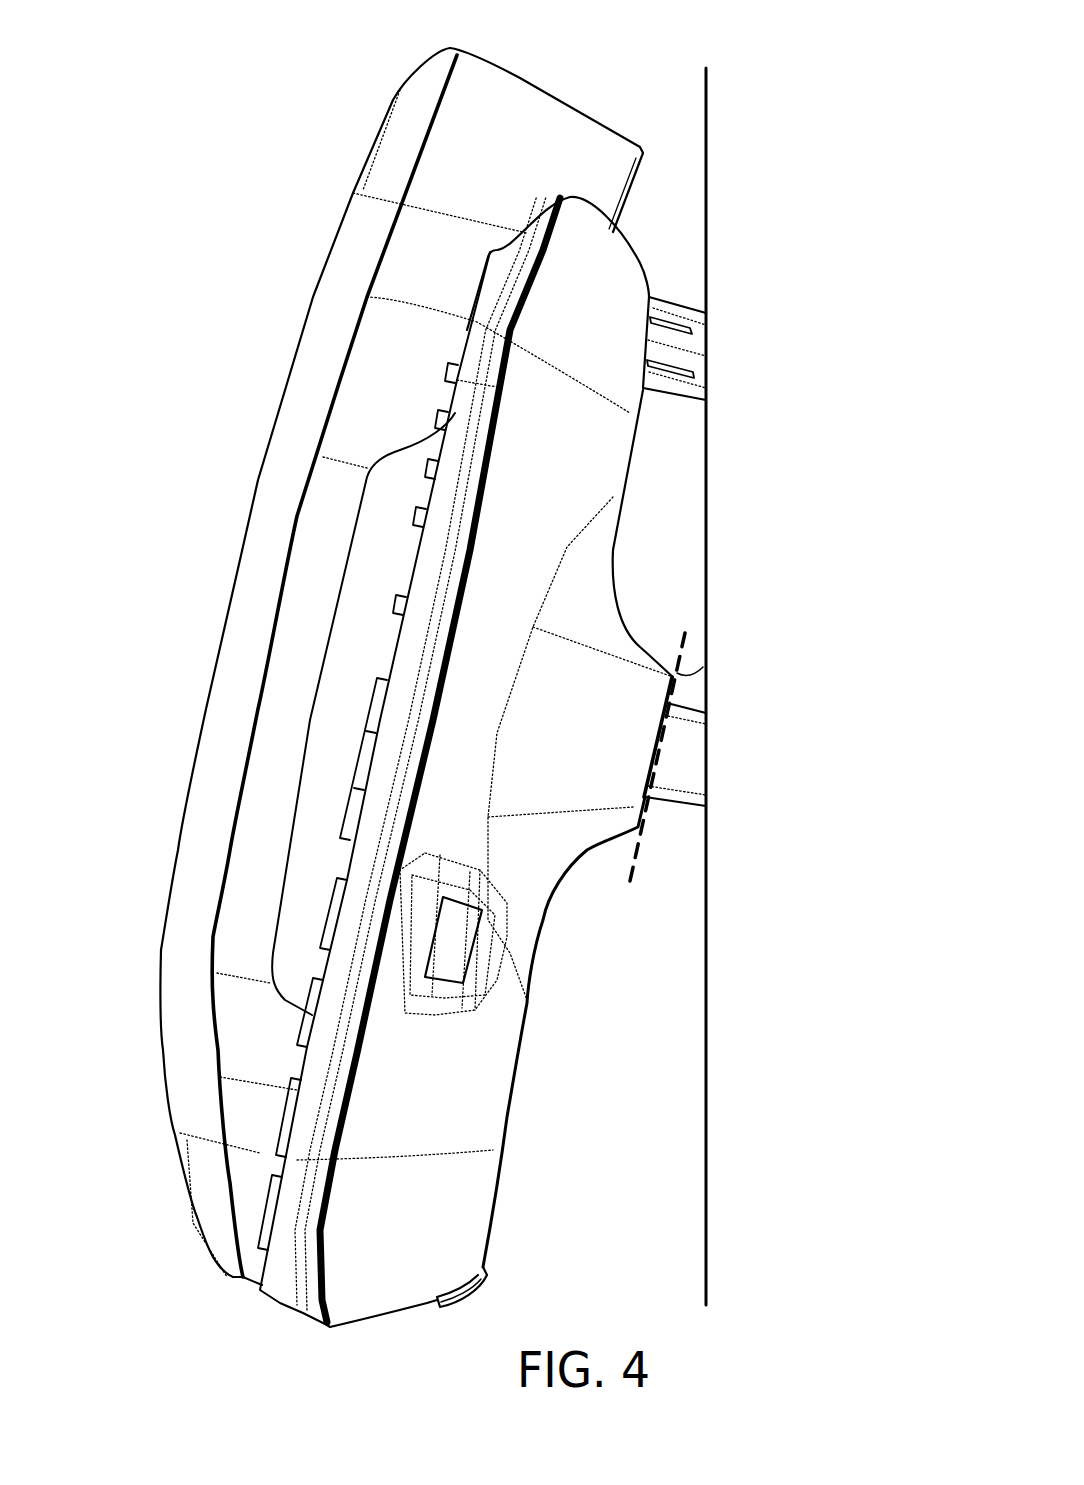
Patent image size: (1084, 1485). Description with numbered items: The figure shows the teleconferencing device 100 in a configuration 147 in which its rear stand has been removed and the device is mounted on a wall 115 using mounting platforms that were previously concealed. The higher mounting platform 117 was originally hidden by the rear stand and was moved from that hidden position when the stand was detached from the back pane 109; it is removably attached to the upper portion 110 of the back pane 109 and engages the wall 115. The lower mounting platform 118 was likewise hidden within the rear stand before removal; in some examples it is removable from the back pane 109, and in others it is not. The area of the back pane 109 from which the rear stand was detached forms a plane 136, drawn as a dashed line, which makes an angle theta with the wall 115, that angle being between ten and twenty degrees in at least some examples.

The teleconferencing device 100 is at (442, 37).
The configuration 147 is at (205, 240).
The wall 115 is at (683, 106).
The upper portion 110 is at (640, 215).
The mounting platform 117 is at (735, 310).
The back pane 109 is at (650, 476).
The mounting platform 118 is at (735, 733).
The plane 136 is at (637, 853).